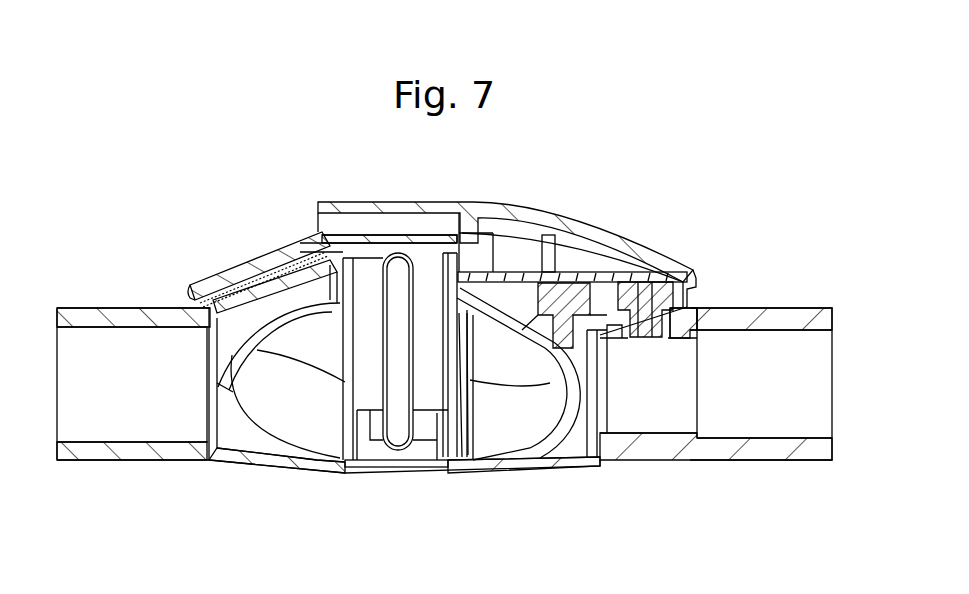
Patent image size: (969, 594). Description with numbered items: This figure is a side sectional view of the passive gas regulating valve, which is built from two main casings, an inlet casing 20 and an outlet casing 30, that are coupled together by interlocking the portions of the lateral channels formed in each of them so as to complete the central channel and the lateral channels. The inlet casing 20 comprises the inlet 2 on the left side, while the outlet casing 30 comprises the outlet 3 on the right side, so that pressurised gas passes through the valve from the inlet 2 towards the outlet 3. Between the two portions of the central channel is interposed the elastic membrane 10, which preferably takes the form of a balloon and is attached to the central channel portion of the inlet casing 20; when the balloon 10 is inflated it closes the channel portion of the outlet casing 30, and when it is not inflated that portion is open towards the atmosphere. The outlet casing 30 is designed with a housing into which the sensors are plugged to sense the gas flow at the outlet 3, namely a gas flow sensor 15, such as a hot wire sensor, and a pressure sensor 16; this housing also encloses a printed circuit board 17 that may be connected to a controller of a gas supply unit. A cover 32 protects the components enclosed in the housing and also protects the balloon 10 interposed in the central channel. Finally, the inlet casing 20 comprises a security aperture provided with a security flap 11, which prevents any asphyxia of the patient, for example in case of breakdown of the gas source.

The inlet 2 is at (102, 400).
The outlet 3 is at (783, 408).
The elastic membrane 10 is at (396, 418).
The security flap 11 is at (243, 275).
The gas flow sensor 15 is at (565, 290).
The pressure sensor 16 is at (655, 296).
The printed circuit board 17 is at (556, 274).
The inlet casing 20 is at (203, 483).
The outlet casing 30 is at (733, 483).
The cover 32 is at (513, 212).